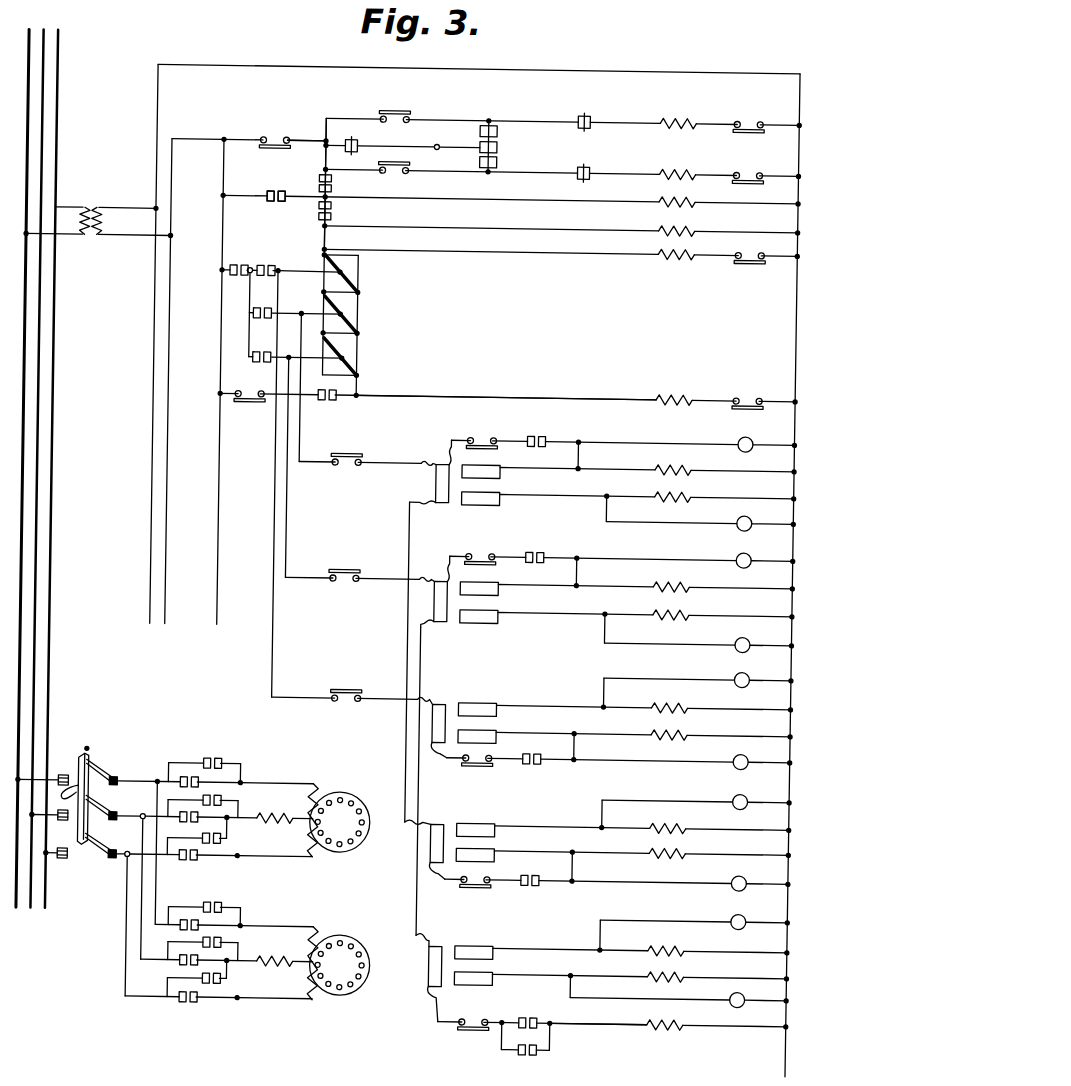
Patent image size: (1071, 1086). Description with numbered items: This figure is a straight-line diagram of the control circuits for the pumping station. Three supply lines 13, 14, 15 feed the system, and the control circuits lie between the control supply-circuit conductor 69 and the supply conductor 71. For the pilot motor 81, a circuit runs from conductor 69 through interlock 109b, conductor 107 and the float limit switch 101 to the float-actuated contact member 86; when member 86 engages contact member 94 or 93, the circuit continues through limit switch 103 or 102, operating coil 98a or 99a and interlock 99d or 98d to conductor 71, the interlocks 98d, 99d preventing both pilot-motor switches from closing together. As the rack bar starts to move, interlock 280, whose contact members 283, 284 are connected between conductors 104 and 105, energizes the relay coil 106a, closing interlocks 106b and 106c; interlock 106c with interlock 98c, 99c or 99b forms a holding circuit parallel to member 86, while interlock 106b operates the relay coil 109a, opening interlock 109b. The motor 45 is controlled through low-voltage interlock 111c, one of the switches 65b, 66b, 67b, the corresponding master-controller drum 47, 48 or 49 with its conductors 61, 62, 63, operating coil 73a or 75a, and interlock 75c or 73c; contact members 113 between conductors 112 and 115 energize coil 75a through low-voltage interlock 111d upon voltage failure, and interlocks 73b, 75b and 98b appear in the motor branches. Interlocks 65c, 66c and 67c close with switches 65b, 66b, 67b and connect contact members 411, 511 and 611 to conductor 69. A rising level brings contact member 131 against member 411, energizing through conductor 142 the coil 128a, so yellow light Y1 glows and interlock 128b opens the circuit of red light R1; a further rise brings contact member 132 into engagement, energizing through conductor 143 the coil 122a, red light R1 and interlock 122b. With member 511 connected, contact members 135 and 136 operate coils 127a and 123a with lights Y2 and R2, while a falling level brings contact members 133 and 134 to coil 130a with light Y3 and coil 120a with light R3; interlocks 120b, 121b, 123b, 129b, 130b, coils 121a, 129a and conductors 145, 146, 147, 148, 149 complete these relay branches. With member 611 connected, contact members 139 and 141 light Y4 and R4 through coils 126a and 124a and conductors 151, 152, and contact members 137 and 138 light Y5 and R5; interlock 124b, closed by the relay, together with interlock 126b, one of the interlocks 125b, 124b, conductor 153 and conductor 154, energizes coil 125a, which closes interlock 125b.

The supply line 13 is at (22, 620).
The supply line 14 is at (37, 644).
The supply line 15 is at (52, 665).
The motor 45 is at (344, 955).
The pilot motor 81 is at (347, 814).
The master controller drum 47 is at (357, 274).
The master controller drum 48 is at (357, 315).
The master controller drum 49 is at (356, 357).
The conductor 61 is at (312, 274).
The conductor 62 is at (310, 312).
The conductor 63 is at (304, 358).
The switch 65b is at (268, 270).
The interlock 65c is at (350, 694).
The switch 66b is at (246, 326).
The interlock 66c is at (348, 471).
The switch 67b is at (262, 364).
The interlock 67c is at (348, 568).
The control supply-circuit conductor 69 is at (218, 188).
The supply conductor 71 is at (793, 312).
The operating coil 73a is at (658, 248).
The contact 73b is at (192, 922).
The interlock 73c is at (747, 394).
The operating coil 75a is at (669, 388).
The contact 75b is at (222, 908).
The interlock 75c is at (746, 259).
The contact member 86 is at (491, 146).
The contact member 93 is at (491, 126).
The contact member 94 is at (491, 165).
The operating coil 98a is at (676, 161).
The contact 98b is at (188, 775).
The interlock 98c is at (405, 161).
The interlock 98d is at (742, 116).
The operating coil 99a is at (686, 106).
The interlock 99b is at (214, 764).
The interlock 99c is at (384, 110).
The interlock 99d is at (742, 168).
The limit switch 101 is at (352, 143).
The limit switch 102 is at (578, 111).
The limit switch 103 is at (580, 165).
The conductor 104 is at (245, 194).
The conductor 105 is at (330, 157).
The resistor 106a is at (658, 196).
The interlock 106b is at (327, 213).
The interlock 106c is at (327, 185).
The conductor 107 is at (306, 144).
The resistor 109a is at (658, 224).
The interlock 109b is at (272, 132).
The low-voltage interlock 111c is at (240, 262).
The low-voltage interlock 111d is at (249, 404).
The conductor 112 is at (319, 402).
The contact members 113 is at (332, 402).
The conductor 115 is at (383, 396).
The relay operating coil 120a is at (658, 464).
The contact 120b is at (540, 435).
The resistor 121a is at (691, 582).
The contact 121b is at (558, 547).
The relay operating coil 122a is at (691, 730).
The interlock 122b is at (534, 765).
The relay operating coil 123a is at (689, 850).
The contact 123b is at (535, 885).
The resistor 124a is at (685, 973).
The interlock 124b is at (537, 1055).
The relay operating coil 125a is at (681, 1023).
The interlock 125b is at (538, 1017).
The resistor 126a is at (679, 946).
The interlock 126b is at (483, 1018).
The relay operating coil 127a is at (690, 825).
The relay operating coil 128a is at (683, 704).
The interlock 128b is at (478, 765).
The resistor 129a is at (691, 610).
The switch 129b is at (478, 553).
The relay operating coil 130a is at (691, 492).
The switch 130b is at (480, 436).
The contact member 131 is at (490, 694).
The contact member 132 is at (499, 727).
The contact member 133 is at (499, 504).
The contact member 134 is at (499, 465).
The contact member 135 is at (489, 822).
The contact member 136 is at (500, 848).
The contact member 137 is at (502, 620).
The contact member 138 is at (501, 588).
The contact member 139 is at (480, 945).
The contact member 141 is at (502, 968).
The conductor 142 is at (555, 703).
The conductor 143 is at (552, 730).
The conductor 145 is at (548, 467).
The conductor 146 is at (557, 824).
The conductor 147 is at (557, 494).
The conductor 148 is at (564, 616).
The conductor 149 is at (567, 584).
The conductor 151 is at (547, 946).
The conductor 152 is at (553, 970).
The conductor 153 is at (507, 1024).
The conductor 154 is at (606, 1022).
The interlock 280 is at (284, 183).
The contact member 283 is at (265, 204).
The contact member 284 is at (277, 204).
The contact member 411 is at (439, 703).
The conducting member 511 is at (435, 487).
The contact member 611 is at (435, 604).
The red pilot light R1 is at (734, 751).
The red light R2 is at (736, 876).
The red light R3 is at (746, 433).
The red signal light R4 is at (736, 994).
The red light R5 is at (741, 549).
The yellow pilot light Y1 is at (739, 669).
The yellow light Y2 is at (739, 790).
The yellow light Y3 is at (743, 512).
The yellow signal light Y4 is at (739, 910).
The yellow light Y5 is at (743, 634).